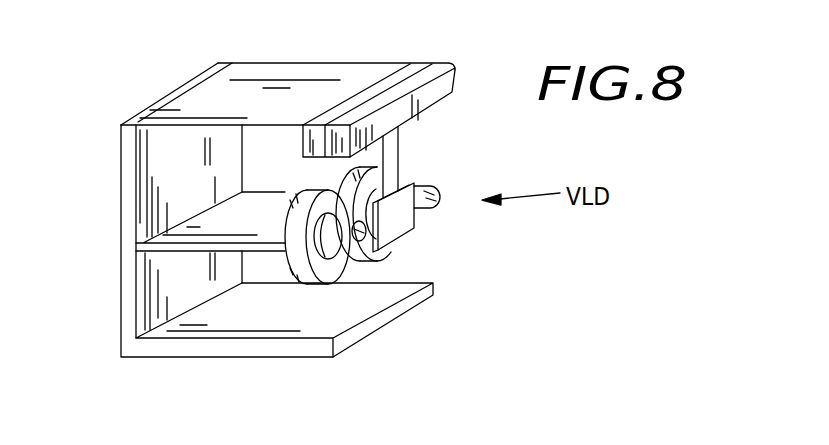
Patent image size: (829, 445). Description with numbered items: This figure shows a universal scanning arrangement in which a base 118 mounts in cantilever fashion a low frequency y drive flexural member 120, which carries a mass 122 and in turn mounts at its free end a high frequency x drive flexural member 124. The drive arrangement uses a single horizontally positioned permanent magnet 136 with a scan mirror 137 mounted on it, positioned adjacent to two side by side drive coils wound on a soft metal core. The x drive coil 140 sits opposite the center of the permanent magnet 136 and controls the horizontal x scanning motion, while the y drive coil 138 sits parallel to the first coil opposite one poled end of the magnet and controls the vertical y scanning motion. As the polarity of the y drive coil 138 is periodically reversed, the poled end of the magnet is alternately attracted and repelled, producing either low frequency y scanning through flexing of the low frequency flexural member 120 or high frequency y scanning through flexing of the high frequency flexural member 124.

The base 118 is at (121, 241).
The low frequency y drive flexural member 120 is at (318, 30).
The mass 122 is at (418, 63).
The high frequency x drive flexural member 124 is at (399, 156).
The permanent magnet 136 is at (438, 190).
The scan mirror 137 is at (414, 222).
The y drive coil 138 is at (343, 284).
The x drive coil 140 is at (380, 254).